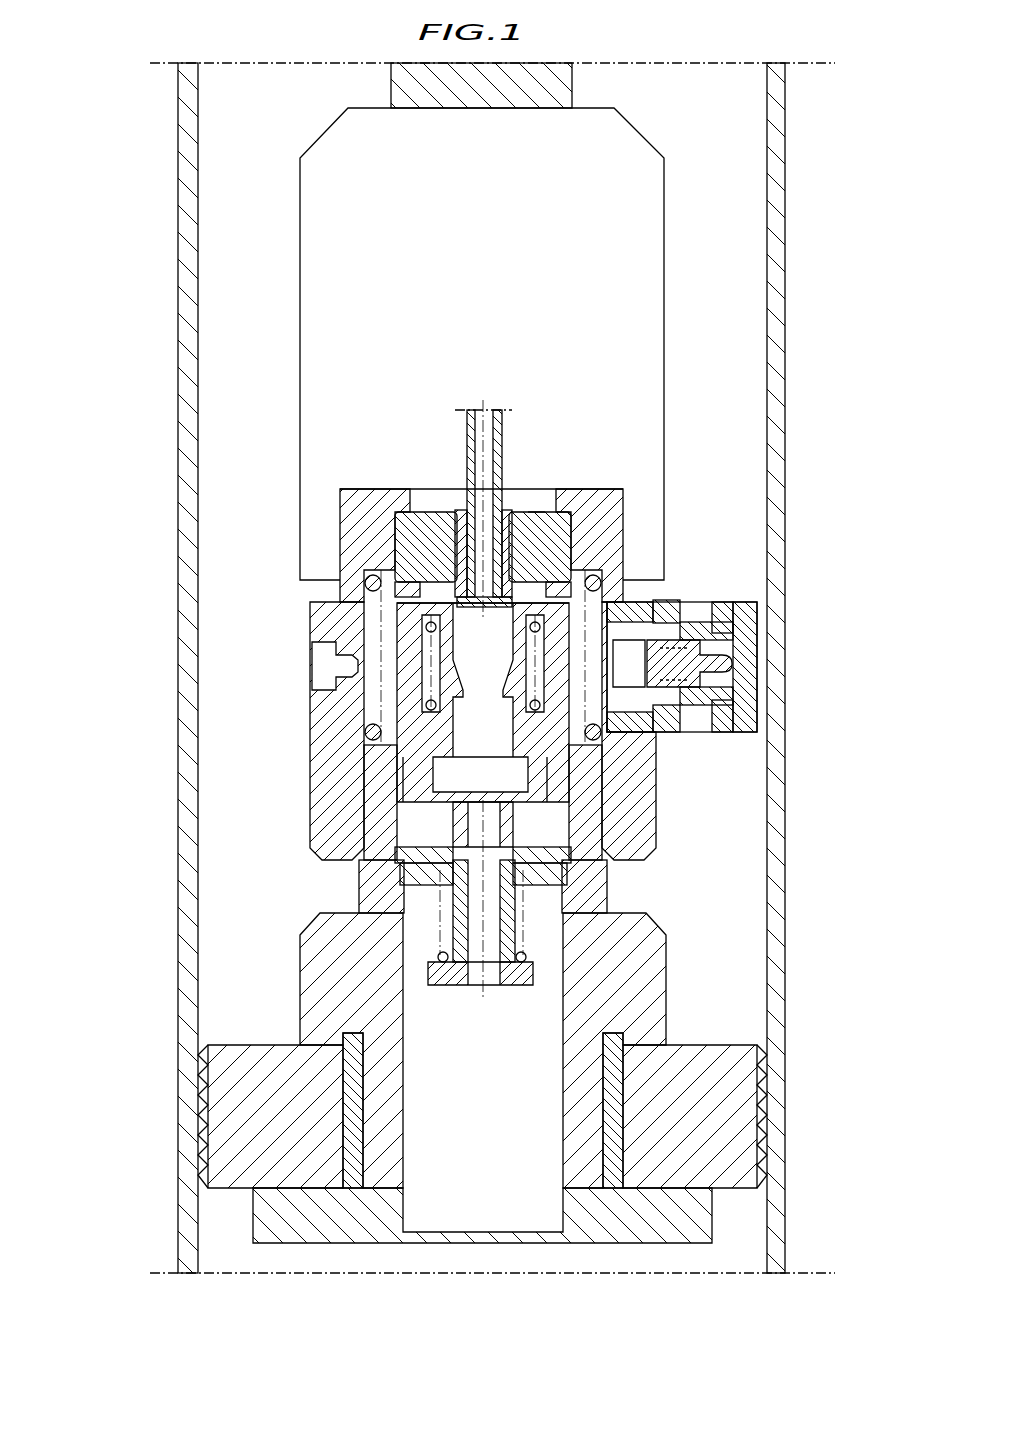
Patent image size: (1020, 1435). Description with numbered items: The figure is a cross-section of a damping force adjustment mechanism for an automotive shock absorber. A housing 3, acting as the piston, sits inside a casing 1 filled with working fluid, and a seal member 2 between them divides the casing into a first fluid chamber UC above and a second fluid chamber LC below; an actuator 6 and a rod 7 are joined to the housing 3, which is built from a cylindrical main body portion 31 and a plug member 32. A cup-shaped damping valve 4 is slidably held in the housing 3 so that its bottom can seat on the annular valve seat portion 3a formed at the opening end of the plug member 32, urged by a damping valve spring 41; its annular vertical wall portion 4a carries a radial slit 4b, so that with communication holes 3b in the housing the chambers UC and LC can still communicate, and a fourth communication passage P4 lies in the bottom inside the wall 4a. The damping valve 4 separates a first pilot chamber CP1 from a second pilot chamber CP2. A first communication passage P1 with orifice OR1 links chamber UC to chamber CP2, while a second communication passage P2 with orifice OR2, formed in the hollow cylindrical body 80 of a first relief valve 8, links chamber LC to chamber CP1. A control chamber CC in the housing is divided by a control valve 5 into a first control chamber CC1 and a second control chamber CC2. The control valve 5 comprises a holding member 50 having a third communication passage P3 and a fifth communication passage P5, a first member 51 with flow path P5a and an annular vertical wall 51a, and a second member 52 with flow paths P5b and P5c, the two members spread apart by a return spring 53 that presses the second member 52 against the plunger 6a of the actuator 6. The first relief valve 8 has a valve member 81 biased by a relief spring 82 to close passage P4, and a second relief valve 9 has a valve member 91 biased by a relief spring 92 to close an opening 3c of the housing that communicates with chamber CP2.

The casing 1 is at (778, 1237).
The seal member 2 is at (765, 1172).
The housing 3 is at (600, 522).
The valve seat portion 3a is at (385, 905).
The communication holes 3b is at (390, 860).
The opening 3c is at (650, 612).
The damping valve 4 is at (600, 895).
The vertical wall portion 4a is at (420, 875).
The slit 4b is at (410, 890).
The control valve 5 is at (505, 505).
The actuator 6 is at (645, 180).
The plunger 6a is at (540, 508).
The rod 7 is at (548, 90).
The first relief valve 8 is at (590, 1060).
The second relief valve 9 is at (752, 735).
The cylindrical main body portion 31 is at (725, 1090).
The plug member 32 is at (700, 1205).
The damping valve spring 41 is at (545, 790).
The holding member 50 is at (548, 515).
The first member 51 is at (548, 820).
The vertical wall 51a is at (660, 735).
The second member 52 is at (600, 578).
The return spring 53 is at (620, 598).
The hollow cylindrical body 80 is at (535, 972).
The valve member 81 is at (515, 925).
The relief spring 82 is at (500, 945).
The valve member 91 is at (725, 660).
The relief spring 92 is at (715, 625).
The first fluid chamber UC is at (215, 180).
The second fluid chamber LC is at (215, 1230).
The control chamber CC is at (350, 548).
The first control chamber CC1 is at (470, 735).
The second control chamber CC2 is at (460, 715).
The first communication passage P1 is at (330, 662).
The second communication passage P2 is at (340, 905).
The third communication passage P3 is at (405, 638).
The fourth communication passage P4 is at (435, 835).
The fifth communication passage P5 is at (380, 640).
The flow path P5a is at (435, 760).
The flow path P5b is at (425, 705).
The flow path P5c is at (395, 545).
The first stationary orifice OR1 is at (335, 672).
The second stationary orifice OR2 is at (515, 962).
The first pilot chamber CP1 is at (590, 870).
The second pilot chamber CP2 is at (760, 718).